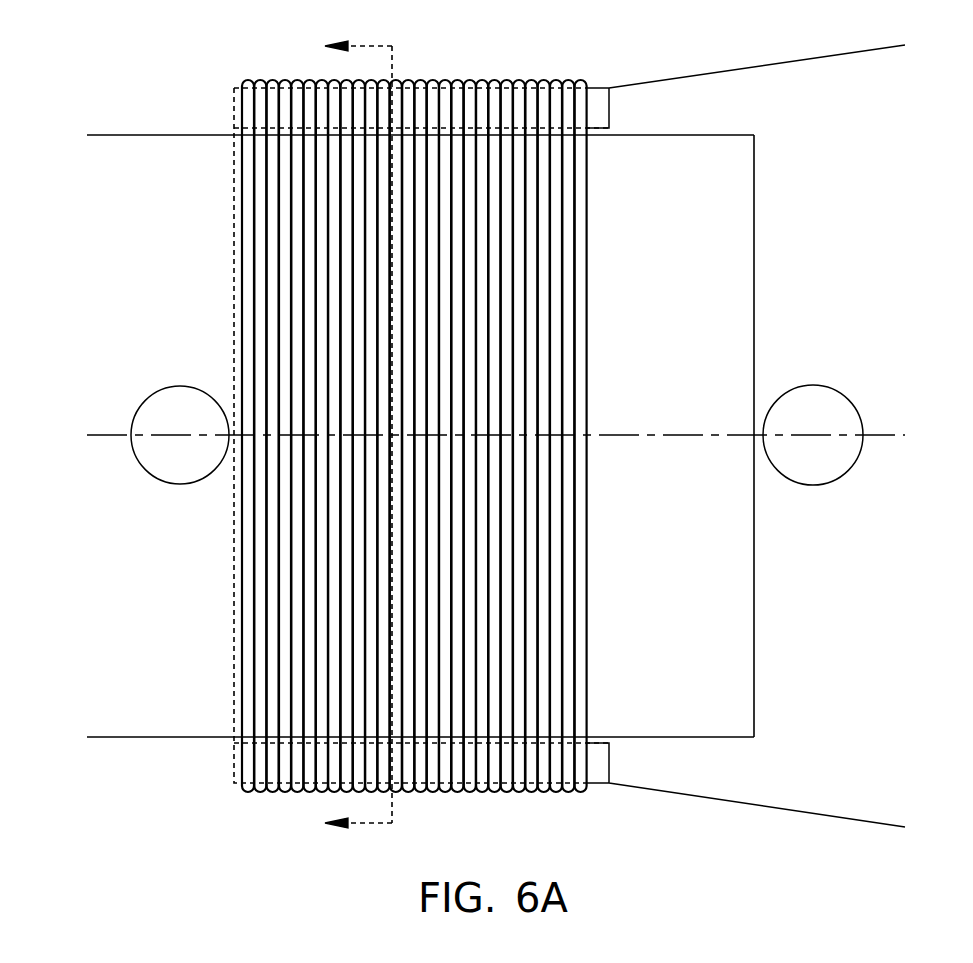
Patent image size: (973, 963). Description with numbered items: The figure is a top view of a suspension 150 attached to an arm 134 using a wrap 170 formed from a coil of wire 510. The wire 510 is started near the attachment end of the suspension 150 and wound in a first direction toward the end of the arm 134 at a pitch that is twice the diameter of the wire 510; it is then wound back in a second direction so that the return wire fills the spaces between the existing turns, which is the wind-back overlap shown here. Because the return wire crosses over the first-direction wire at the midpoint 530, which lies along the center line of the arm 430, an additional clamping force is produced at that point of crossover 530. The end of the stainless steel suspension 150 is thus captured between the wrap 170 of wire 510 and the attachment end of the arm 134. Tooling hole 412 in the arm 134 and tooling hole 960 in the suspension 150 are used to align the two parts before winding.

The wrap 170 is at (452, 407).
The midpoint 530 is at (555, 417).
The wire 510 is at (582, 680).
The suspension 150 is at (172, 312).
The arm 134 is at (935, 312).
The center line of the arm 430 is at (883, 435).
The tooling hole 960 is at (159, 481).
The tooling hole 412 is at (791, 481).